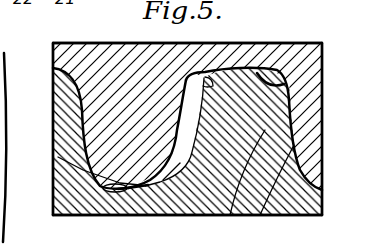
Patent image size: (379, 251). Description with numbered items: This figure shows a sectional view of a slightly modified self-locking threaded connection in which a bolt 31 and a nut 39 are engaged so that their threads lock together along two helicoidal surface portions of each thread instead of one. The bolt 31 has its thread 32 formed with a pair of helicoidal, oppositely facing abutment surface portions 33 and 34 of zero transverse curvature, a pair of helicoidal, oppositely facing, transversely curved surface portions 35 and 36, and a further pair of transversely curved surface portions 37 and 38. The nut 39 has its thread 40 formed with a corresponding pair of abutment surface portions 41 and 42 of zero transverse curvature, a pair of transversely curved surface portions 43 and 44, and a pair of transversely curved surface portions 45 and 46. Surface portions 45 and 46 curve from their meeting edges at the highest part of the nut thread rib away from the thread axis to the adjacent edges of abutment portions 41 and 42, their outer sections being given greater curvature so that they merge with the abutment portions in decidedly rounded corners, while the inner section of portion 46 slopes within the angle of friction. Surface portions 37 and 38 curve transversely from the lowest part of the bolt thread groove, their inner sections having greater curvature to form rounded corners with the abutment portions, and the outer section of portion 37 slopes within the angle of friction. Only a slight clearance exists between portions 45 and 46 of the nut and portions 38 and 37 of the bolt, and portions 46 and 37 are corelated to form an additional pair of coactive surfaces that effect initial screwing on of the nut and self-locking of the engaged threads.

The bolt 31 is at (53, 219).
The thread 32 is at (58, 157).
The abutment surface portion 33 is at (199, 214).
The abutment surface portion 34 is at (53, 150).
The transversely curved surface portion 35 is at (207, 101).
The transversely curved surface portion 36 is at (55, 70).
The transversely curved surface portion 37 is at (172, 216).
The transversely curved surface portion 38 is at (100, 197).
The nut 39 is at (63, 53).
The thread 40 is at (138, 72).
The abutment surface portion 41 is at (53, 138).
The abutment surface portion 42 is at (167, 131).
The transversely curved surface portion 43 is at (71, 58).
The transversely curved surface portion 44 is at (229, 97).
The transversely curved surface portion 45 is at (120, 186).
The transversely curved surface portion 46 is at (174, 132).